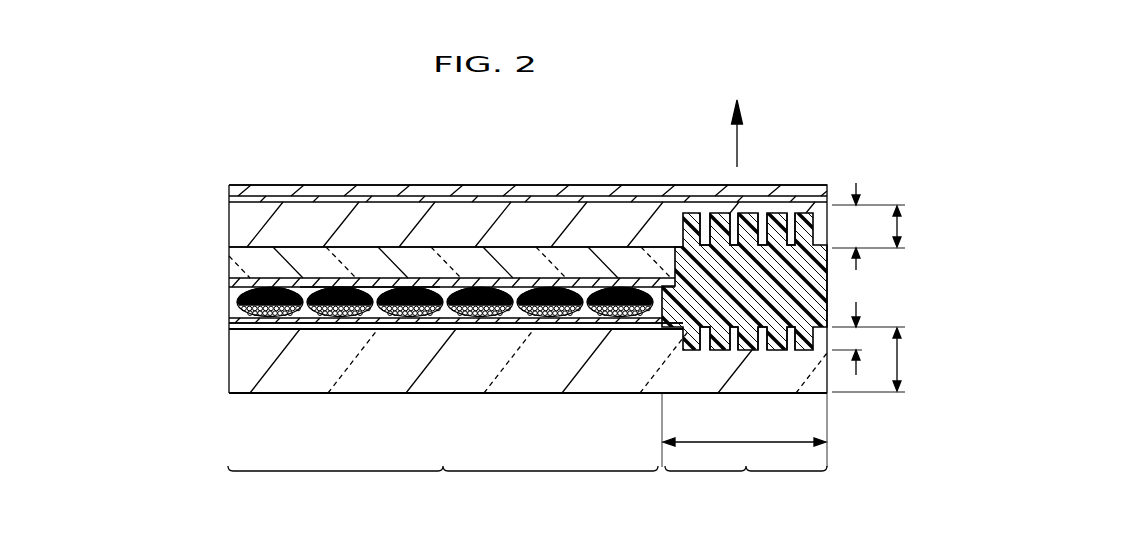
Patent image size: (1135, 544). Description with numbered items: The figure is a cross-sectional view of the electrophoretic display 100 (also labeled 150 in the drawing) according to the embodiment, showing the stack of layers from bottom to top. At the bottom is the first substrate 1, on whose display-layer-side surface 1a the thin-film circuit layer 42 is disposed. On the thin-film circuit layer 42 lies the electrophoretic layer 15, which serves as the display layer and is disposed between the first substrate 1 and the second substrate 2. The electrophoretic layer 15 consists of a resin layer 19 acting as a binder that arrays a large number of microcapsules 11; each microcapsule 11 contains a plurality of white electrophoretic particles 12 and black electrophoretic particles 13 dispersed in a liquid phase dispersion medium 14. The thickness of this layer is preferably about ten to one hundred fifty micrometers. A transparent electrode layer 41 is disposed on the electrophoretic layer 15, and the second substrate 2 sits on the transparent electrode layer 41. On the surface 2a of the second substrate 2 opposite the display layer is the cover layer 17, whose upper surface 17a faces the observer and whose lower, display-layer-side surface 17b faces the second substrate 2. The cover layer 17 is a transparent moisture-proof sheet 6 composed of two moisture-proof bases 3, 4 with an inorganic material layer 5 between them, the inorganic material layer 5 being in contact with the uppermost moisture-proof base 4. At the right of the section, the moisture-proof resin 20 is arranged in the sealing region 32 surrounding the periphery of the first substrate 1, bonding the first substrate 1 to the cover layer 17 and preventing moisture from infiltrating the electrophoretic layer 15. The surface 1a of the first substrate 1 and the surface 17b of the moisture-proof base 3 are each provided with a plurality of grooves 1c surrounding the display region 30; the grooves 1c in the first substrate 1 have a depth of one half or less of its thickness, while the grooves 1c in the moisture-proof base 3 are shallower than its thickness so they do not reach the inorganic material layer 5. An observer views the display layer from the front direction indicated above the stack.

The first substrate 1 is at (229, 386).
The surface of the first substrate 1a is at (588, 322).
The grooves 1c is at (734, 226).
The second substrate 2 is at (228, 268).
The surface of the second substrate 2a is at (521, 247).
The moisture-proof base 3 is at (228, 228).
The moisture-proof base 4 is at (228, 189).
The inorganic material layer 5 is at (228, 199).
The transparent moisture-proof sheet 6 is at (477, 184).
The microcapsules 11 is at (230, 322).
The white electrophoretic particles 12 is at (233, 328).
The black electrophoretic particles 13 is at (230, 307).
The liquid phase dispersion medium 14 is at (236, 351).
The electrophoretic layer 15 is at (115, 390).
The cover layer 17 is at (152, 152).
The upper surface of protective film 17a is at (423, 185).
The surface of the cover layer 17b is at (452, 247).
The resin layer 19 is at (230, 292).
The moisture-proof resin 20 is at (684, 242).
The display region 30 is at (443, 485).
The sealing region 32 is at (744, 449).
The transparent electrode layer 41 is at (368, 286).
The thin-film circuit layer 42 is at (362, 326).
The electrophoretic display 100 is at (841, 126).
The display unit 150 is at (522, 285).